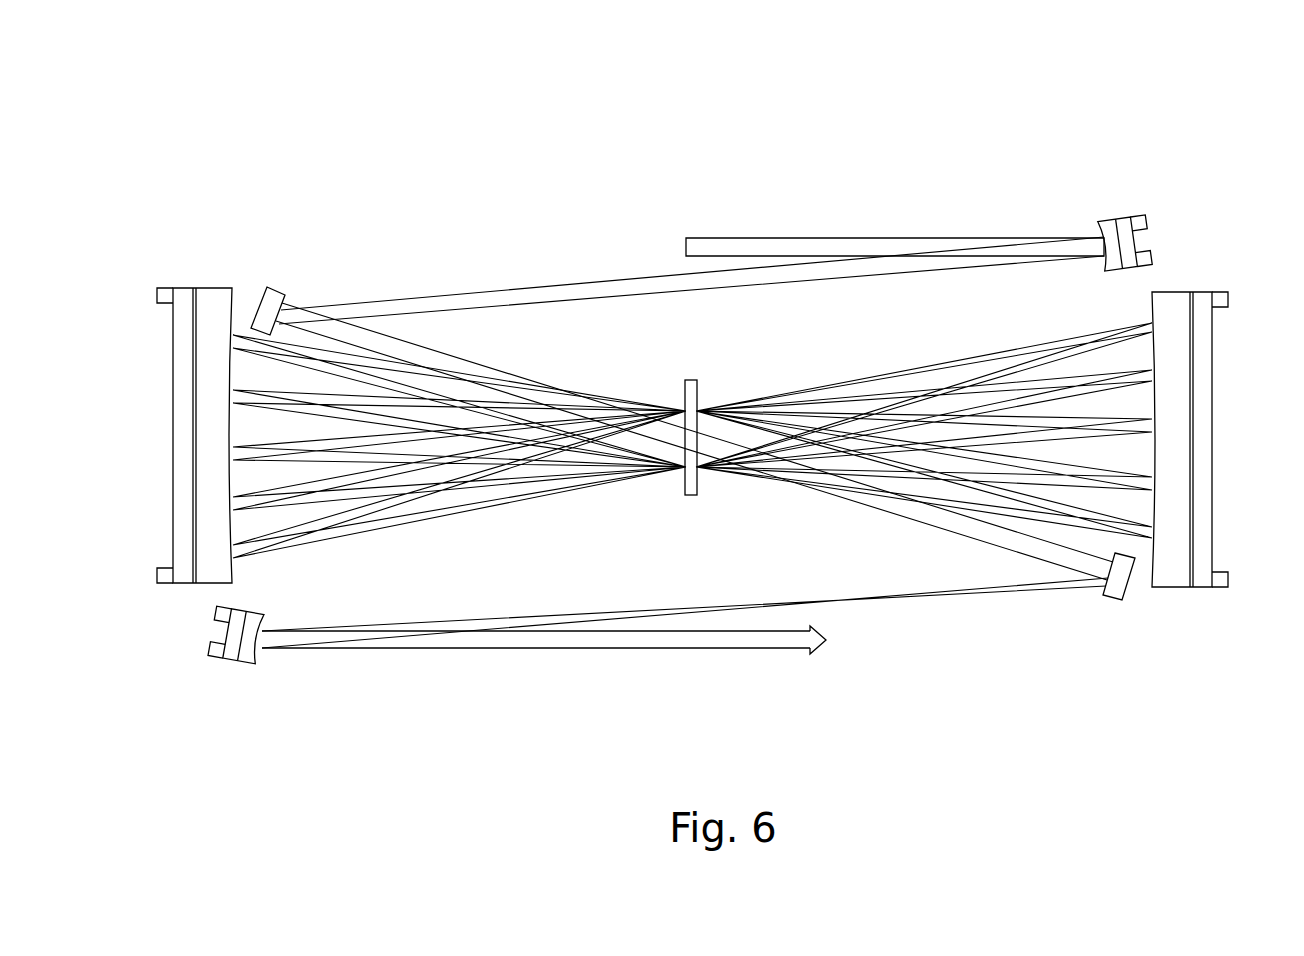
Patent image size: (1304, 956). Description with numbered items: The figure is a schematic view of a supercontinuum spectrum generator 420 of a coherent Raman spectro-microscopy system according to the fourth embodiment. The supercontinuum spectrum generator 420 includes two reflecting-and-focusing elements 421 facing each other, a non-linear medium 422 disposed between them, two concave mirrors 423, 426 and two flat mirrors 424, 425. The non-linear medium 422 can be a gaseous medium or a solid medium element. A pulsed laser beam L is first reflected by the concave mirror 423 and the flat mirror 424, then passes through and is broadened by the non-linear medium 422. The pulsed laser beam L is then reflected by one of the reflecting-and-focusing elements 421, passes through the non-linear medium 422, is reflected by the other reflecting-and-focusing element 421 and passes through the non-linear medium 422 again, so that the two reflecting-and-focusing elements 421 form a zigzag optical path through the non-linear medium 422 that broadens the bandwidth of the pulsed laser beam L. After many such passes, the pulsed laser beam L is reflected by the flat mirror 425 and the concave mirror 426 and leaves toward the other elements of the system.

The supercontinuum spectrum generator 420 is at (425, 111).
The reflecting-and-focusing element 421 is at (210, 292).
The non-linear medium 422 is at (692, 497).
The concave mirror 423 is at (1142, 217).
The flat mirror 424 is at (273, 297).
The flat mirror 425 is at (1113, 600).
The concave mirror 426 is at (232, 662).
The pulsed laser beam L is at (850, 243).